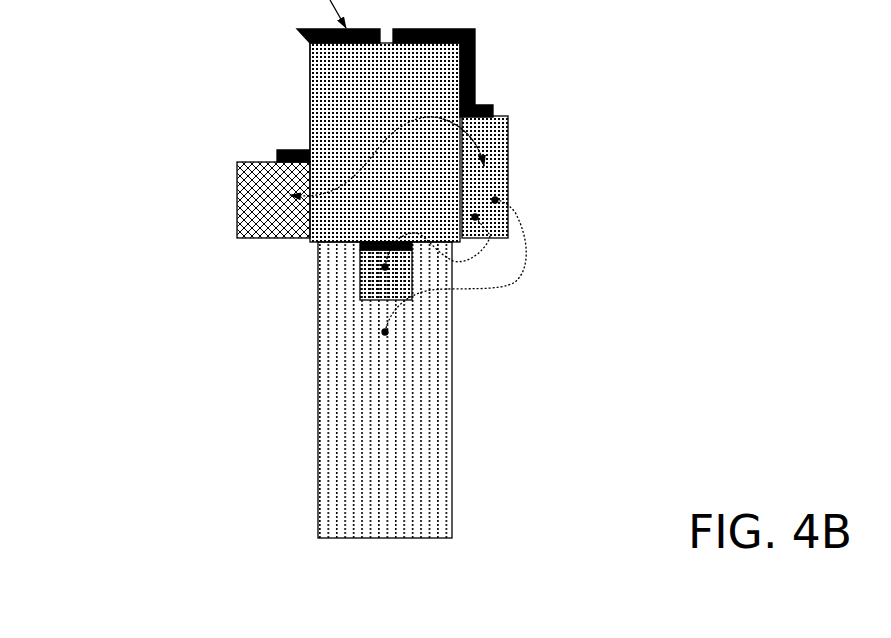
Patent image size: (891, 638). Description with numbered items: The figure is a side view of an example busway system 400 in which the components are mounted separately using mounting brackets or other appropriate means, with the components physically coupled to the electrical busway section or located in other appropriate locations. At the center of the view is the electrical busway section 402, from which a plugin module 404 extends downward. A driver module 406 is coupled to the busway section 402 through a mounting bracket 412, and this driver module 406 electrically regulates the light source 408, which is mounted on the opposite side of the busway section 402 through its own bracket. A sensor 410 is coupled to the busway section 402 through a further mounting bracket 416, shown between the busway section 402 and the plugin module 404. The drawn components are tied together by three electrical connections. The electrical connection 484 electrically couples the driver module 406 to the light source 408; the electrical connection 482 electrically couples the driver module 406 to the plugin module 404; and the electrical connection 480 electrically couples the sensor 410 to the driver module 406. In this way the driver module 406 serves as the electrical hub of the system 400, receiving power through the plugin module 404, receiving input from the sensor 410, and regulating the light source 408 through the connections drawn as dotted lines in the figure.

The busway system 400 is at (234, 46).
The electrical busway section 402 is at (332, 107).
The plugin module 404 is at (457, 407).
The driver module 406 is at (513, 143).
The light source 408 is at (234, 207).
The sensor 410 is at (359, 283).
The mounting bracket 412 is at (479, 54).
The mounting bracket 416 is at (359, 250).
The electrical connection 480 is at (447, 253).
The electrical connection 482 is at (532, 262).
The electrical connection 484 is at (407, 109).